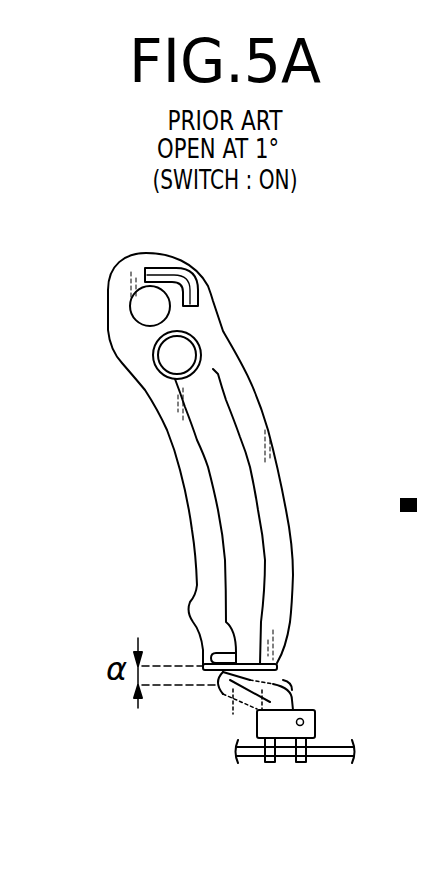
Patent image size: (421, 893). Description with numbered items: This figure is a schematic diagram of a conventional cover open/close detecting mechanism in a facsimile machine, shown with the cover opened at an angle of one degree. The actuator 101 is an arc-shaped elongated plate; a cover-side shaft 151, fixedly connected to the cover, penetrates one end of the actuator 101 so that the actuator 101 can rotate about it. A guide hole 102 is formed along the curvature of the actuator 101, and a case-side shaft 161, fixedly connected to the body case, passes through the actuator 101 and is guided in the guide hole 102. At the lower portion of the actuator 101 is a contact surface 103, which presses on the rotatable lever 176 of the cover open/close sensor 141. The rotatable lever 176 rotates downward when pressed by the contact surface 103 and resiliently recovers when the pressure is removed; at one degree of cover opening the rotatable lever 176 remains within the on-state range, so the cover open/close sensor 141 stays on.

The actuator 101 is at (228, 360).
The guide hole 102 is at (225, 460).
The contact surface 103 is at (282, 677).
The cover open/close sensor 141 is at (316, 721).
The cover-side shaft 151 is at (146, 302).
The case-side shaft 161 is at (168, 357).
The rotatable lever 176 is at (237, 698).